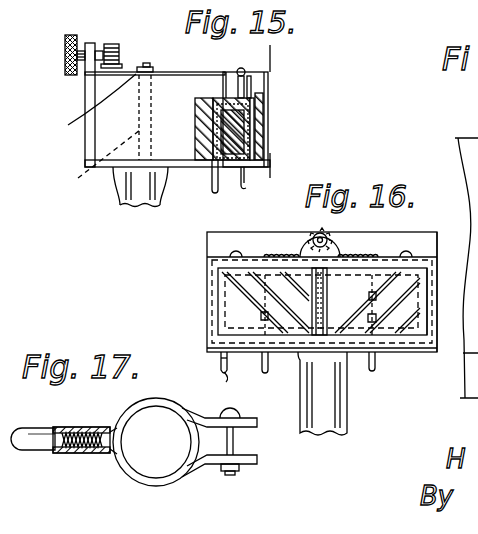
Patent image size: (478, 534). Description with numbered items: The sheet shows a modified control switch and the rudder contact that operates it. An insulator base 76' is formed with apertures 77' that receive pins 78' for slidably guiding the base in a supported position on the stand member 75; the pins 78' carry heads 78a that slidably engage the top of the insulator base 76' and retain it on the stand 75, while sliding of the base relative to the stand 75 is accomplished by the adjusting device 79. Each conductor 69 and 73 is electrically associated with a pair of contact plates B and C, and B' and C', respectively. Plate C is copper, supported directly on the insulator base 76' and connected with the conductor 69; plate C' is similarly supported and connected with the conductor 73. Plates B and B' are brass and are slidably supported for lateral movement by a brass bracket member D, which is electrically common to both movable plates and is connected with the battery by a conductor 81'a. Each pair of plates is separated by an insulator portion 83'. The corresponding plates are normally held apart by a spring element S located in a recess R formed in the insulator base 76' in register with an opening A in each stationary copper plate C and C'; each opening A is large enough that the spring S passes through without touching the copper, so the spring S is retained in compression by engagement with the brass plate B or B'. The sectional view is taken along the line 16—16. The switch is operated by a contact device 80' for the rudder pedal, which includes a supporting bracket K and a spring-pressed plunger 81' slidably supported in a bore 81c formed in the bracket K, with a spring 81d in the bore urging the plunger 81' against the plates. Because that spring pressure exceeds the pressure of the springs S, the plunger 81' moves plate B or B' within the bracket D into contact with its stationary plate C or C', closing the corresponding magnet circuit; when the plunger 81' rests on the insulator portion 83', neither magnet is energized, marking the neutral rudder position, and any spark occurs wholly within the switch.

In FIG. 15, the adjusting device 79 is at (65, 40).
In FIG. 15, the pins 78' is at (136, 90).
In FIG. 15, the insulator base 76' is at (177, 105).
In FIG. 15, the heads 78a is at (82, 105).
In FIG. 15, the apertures 77' is at (90, 161).
In FIG. 15, the stand member 75 is at (118, 207).
In FIG. 15, the recess R is at (196, 112).
In FIG. 15, the contact plate C is at (259, 129).
In FIG. 16, the contact plate C is at (298, 301).
In FIG. 15, the opening A is at (245, 140).
In FIG. 15, the spring element S is at (252, 128).
In FIG. 16, the spring element S is at (212, 337).
In FIG. 15, the bracket member D is at (238, 72).
In FIG. 16, the bracket member D is at (207, 264).
In FIG. 15, the contact plate B is at (279, 119).
In FIG. 16, the contact plate B is at (296, 301).
In FIG. 15, the section line 16 is at (272, 53).
In FIG. 15, the conductor 69 is at (213, 190).
In FIG. 16, the conductor 69 is at (266, 372).
In FIG. 15, the conductor 81'a is at (247, 192).
In FIG. 16, the conductor 81'a is at (234, 378).
In FIG. 16, the insulator portion 83' is at (340, 301).
In FIG. 16, the contact plate B' is at (435, 301).
In FIG. 16, the contact plate C' is at (438, 282).
In FIG. 16, the conductor 73 is at (374, 370).
In FIG. 17, the supporting bracket K is at (165, 399).
In FIG. 17, the contact device 80' is at (219, 464).
In FIG. 17, the plunger 81' is at (33, 466).
In FIG. 17, the bore 81c is at (84, 453).
In FIG. 17, the spring 81d is at (102, 440).